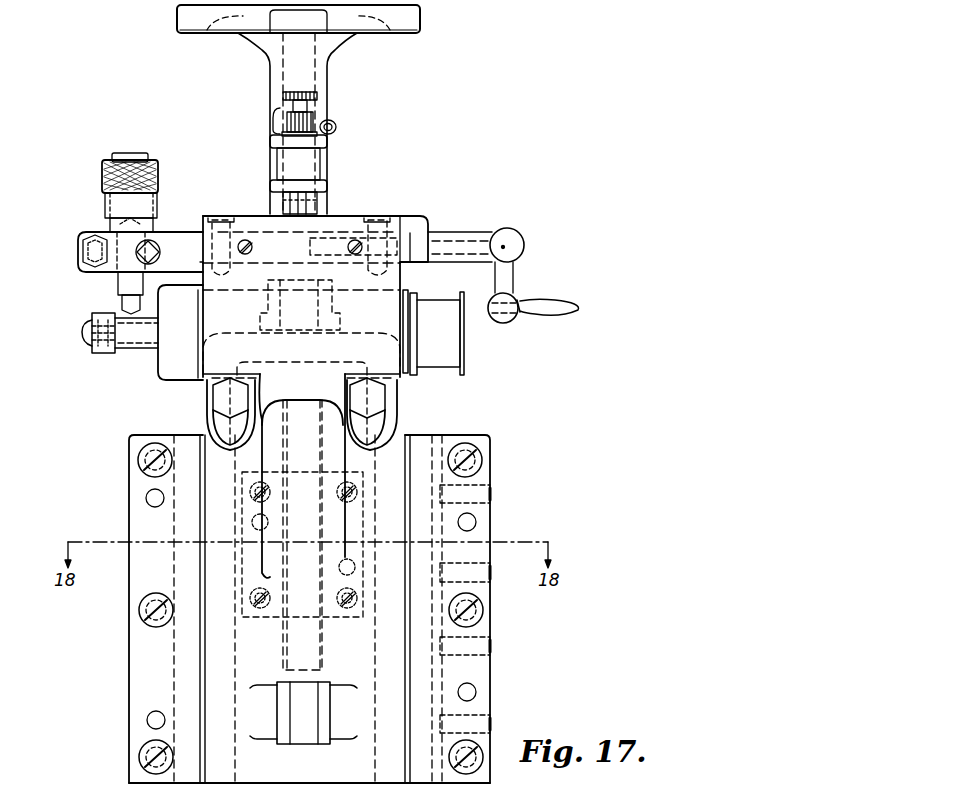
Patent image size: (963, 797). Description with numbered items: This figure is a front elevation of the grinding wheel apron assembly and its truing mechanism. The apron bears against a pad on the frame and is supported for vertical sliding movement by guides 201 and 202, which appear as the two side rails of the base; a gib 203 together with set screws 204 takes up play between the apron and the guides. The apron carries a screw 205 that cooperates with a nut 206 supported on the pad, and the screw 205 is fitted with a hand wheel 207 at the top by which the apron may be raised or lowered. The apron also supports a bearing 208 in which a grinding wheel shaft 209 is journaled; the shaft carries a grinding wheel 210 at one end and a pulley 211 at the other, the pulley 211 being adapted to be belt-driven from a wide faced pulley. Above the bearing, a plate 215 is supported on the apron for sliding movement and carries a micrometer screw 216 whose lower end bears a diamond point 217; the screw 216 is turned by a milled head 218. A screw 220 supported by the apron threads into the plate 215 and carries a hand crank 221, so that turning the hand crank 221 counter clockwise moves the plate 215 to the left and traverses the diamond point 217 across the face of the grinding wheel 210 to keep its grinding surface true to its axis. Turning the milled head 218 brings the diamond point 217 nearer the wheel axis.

The guide 201 is at (170, 440).
The guide 202 is at (460, 442).
The gib 203 is at (433, 443).
The set screws 204 is at (490, 490).
The screw 205 is at (292, 650).
The nut 206 is at (353, 530).
The hand wheel 207 is at (418, 22).
The bearing 208 is at (172, 364).
The grinding wheel shaft 209 is at (122, 340).
The grinding wheel 210 is at (98, 348).
The pulley 211 is at (445, 352).
The plate 215 is at (174, 236).
The micrometer screw 216 is at (108, 234).
The diamond point 217 is at (125, 313).
The milled head 218 is at (102, 172).
The screw 220 is at (335, 238).
The hand crank 221 is at (500, 282).